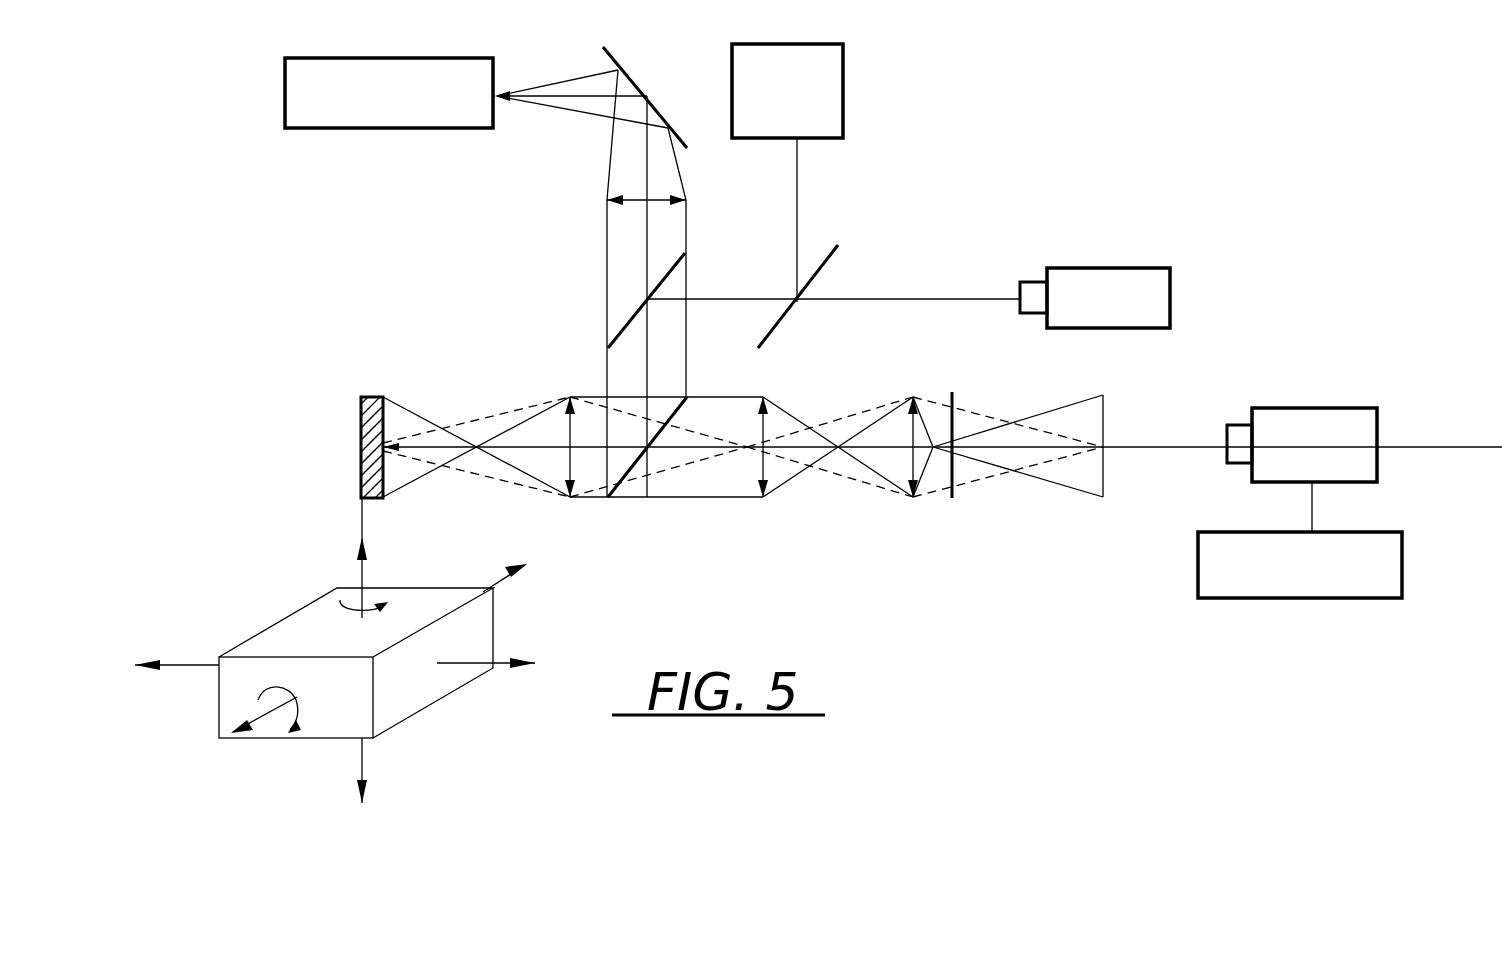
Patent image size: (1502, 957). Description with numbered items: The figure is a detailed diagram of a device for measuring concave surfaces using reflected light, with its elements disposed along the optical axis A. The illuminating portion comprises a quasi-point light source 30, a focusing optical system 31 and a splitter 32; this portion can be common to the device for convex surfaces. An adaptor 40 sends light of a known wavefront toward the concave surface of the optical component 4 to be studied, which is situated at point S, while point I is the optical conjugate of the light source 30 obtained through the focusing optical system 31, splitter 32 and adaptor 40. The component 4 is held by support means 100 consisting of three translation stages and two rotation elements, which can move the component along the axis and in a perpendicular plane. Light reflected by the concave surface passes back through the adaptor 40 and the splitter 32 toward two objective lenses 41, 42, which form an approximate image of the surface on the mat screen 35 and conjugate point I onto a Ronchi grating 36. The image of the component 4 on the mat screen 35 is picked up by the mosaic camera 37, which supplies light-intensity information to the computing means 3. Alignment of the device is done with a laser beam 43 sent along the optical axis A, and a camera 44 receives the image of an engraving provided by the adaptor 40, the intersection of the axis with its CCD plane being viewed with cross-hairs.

The computing means 3 is at (1198, 560).
The optical component 4 is at (382, 507).
The light source 30 is at (420, 58).
The focusing optical system 31 is at (653, 197).
The splitter 32 is at (645, 492).
The mat screen 35 is at (1107, 423).
The Ronchi grating 36 is at (958, 425).
The mosaic camera 37 is at (1307, 408).
The adaptor 40 is at (563, 468).
The objective lens 41 is at (767, 428).
The objective lens 42 is at (907, 428).
The laser beam 43 is at (843, 87).
The camera 44 is at (1140, 268).
The support means 100 is at (303, 605).
The optical axis A is at (1452, 445).